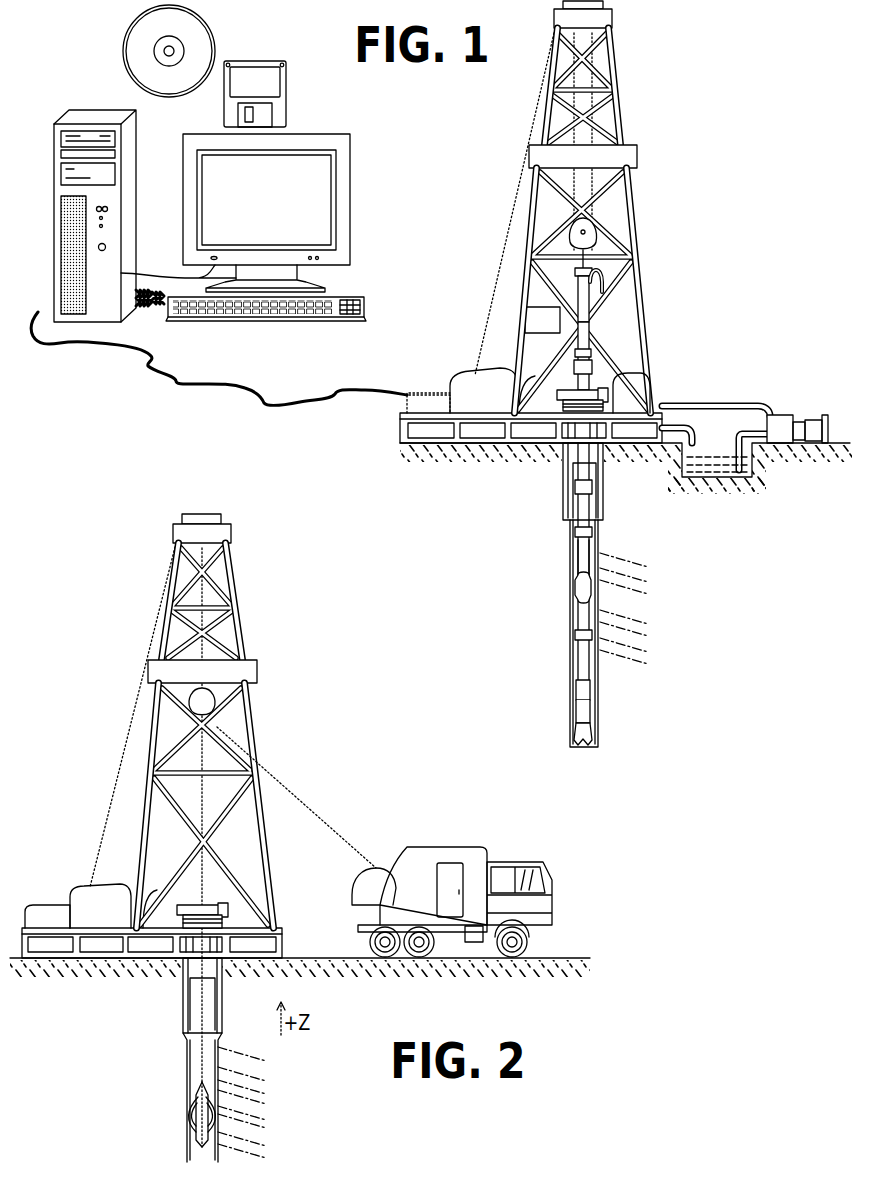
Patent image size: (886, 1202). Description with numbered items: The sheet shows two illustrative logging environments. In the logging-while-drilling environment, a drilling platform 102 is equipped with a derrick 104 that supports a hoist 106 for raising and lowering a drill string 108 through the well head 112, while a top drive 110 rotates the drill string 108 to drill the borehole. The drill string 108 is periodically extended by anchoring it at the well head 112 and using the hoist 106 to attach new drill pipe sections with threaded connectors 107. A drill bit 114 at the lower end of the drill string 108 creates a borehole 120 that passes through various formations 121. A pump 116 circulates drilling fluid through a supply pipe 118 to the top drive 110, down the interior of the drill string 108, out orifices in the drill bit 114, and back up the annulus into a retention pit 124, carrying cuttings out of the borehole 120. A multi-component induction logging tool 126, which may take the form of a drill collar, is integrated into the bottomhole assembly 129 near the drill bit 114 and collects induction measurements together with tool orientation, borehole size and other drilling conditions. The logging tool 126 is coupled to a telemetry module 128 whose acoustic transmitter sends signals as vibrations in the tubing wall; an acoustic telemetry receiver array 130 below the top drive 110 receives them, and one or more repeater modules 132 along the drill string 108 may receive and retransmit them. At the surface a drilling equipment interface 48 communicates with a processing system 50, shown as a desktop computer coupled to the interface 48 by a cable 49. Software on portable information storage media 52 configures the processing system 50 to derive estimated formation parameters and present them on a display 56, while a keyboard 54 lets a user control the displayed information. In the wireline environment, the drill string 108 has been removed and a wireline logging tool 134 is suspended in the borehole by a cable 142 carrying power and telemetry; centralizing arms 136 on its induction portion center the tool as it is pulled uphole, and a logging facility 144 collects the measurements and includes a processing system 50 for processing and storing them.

In FIG. 1, the drilling equipment interface 48 is at (412, 393).
In FIG. 1, the cable 49 is at (172, 388).
In FIG. 1, the processing system 50 is at (135, 237).
In FIG. 1, the portable information storage media 52 is at (214, 48).
In FIG. 1, the keyboard 54 is at (346, 318).
In FIG. 1, the display 56 is at (338, 262).
In FIG. 1, the drilling platform 102 is at (401, 421).
In FIG. 2, the drilling platform 102 is at (286, 928).
In FIG. 1, the derrick 104 is at (622, 117).
In FIG. 2, the derrick 104 is at (268, 896).
In FIG. 1, the hoist 106 is at (595, 230).
In FIG. 2, the hoist 106 is at (213, 700).
In FIG. 1, the threaded connectors 107 is at (577, 531).
In FIG. 1, the drill string 108 is at (592, 562).
In FIG. 1, the top drive 110 is at (583, 293).
In FIG. 1, the well head 112 is at (602, 387).
In FIG. 2, the well head 112 is at (218, 904).
In FIG. 1, the drill bit 114 is at (589, 737).
In FIG. 1, the pump 116 is at (779, 418).
In FIG. 1, the supply pipe 118 is at (729, 403).
In FIG. 1, the borehole 120 is at (575, 574).
In FIG. 1, the formations 121 is at (652, 570).
In FIG. 2, the formations 121 is at (270, 1066).
In FIG. 1, the retention pit 124 is at (697, 467).
In FIG. 1, the multi-component induction logging tool 126 is at (578, 710).
In FIG. 1, the telemetry module 128 is at (578, 693).
In FIG. 1, the bottomhole assembly 129 is at (507, 681).
In FIG. 1, the acoustic telemetry receiver array 130 is at (589, 355).
In FIG. 1, the repeater modules 132 is at (577, 589).
In FIG. 2, the wireline logging tool 134 is at (198, 1103).
In FIG. 2, the centralizing arms 136 is at (192, 1123).
In FIG. 2, the cable 142 is at (282, 770).
In FIG. 2, the logging facility 144 is at (421, 848).